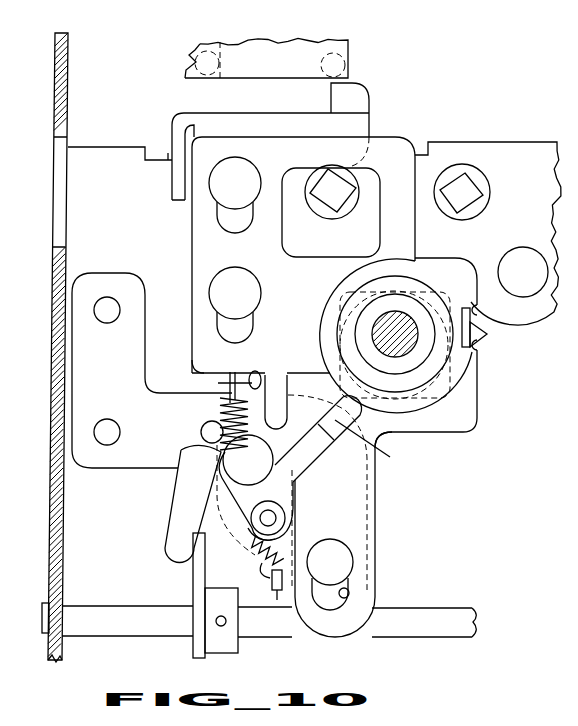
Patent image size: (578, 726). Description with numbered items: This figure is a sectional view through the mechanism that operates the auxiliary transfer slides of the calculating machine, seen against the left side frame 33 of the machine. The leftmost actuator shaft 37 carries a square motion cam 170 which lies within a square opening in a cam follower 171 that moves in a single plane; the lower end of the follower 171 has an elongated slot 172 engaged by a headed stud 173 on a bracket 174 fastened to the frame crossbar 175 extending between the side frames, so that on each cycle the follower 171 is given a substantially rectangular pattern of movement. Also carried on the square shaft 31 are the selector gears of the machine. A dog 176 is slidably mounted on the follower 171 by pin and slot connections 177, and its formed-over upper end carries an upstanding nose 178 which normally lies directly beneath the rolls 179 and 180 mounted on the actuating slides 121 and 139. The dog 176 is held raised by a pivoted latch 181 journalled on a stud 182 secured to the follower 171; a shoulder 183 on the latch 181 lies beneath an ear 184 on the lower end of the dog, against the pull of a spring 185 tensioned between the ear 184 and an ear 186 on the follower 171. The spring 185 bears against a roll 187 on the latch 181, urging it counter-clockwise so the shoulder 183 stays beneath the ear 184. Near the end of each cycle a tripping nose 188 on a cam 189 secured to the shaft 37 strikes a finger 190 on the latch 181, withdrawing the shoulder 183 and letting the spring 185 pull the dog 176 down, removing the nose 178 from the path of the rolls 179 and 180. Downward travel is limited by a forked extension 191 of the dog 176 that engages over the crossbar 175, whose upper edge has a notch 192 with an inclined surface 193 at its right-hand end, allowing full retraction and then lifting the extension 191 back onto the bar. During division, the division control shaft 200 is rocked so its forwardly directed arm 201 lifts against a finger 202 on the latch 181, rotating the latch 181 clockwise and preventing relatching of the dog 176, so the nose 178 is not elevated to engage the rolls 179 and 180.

The left side frame 33 is at (57, 84).
The actuating slide 121 is at (260, 45).
The actuating slide 139 is at (215, 42).
The roll 180 is at (205, 62).
The roll 179 is at (338, 63).
The dog 176 is at (305, 122).
The nose 178 is at (358, 97).
The forked extension 191 is at (180, 181).
The notch 192 is at (152, 157).
The inclined surface 193 is at (168, 150).
The frame crossbar 175 is at (122, 236).
The pin and slot connections 177 is at (240, 170).
The square shaft 31 is at (466, 191).
The cam 189 is at (411, 273).
The actuator shaft 37 is at (405, 340).
The square motion cam 170 is at (430, 392).
The tripping nose 188 is at (482, 336).
The cam follower 171 is at (404, 425).
The shoulder 183 is at (253, 392).
The ear 184 is at (222, 385).
The spring 185 is at (222, 428).
The stud 182 is at (255, 458).
The pivoted latch 181 is at (306, 463).
The finger 190 is at (380, 445).
The roll 187 is at (284, 520).
The headed stud 173 is at (346, 560).
The elongated slot 172 is at (349, 596).
The bracket 174 is at (152, 470).
The finger 202 is at (172, 530).
The arm 201 is at (200, 571).
The ear 186 is at (283, 596).
The division control shaft 200 is at (384, 625).